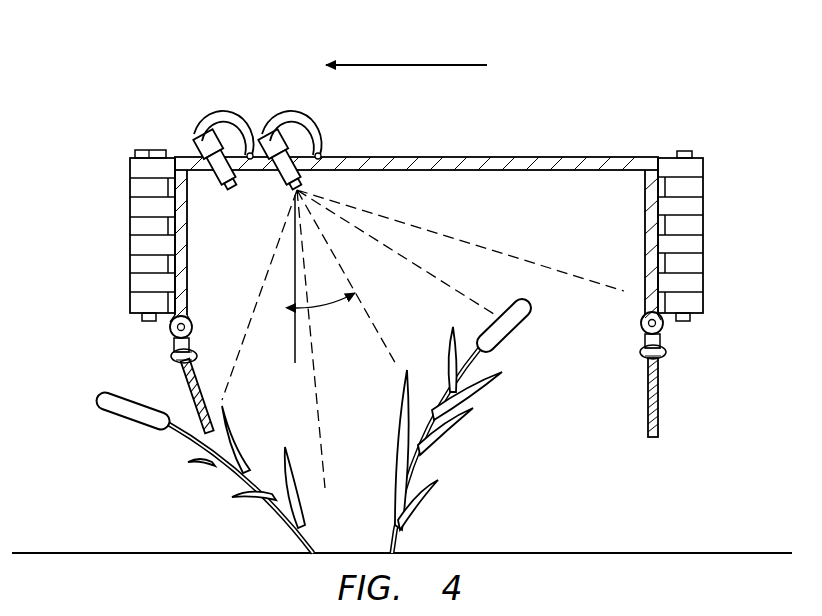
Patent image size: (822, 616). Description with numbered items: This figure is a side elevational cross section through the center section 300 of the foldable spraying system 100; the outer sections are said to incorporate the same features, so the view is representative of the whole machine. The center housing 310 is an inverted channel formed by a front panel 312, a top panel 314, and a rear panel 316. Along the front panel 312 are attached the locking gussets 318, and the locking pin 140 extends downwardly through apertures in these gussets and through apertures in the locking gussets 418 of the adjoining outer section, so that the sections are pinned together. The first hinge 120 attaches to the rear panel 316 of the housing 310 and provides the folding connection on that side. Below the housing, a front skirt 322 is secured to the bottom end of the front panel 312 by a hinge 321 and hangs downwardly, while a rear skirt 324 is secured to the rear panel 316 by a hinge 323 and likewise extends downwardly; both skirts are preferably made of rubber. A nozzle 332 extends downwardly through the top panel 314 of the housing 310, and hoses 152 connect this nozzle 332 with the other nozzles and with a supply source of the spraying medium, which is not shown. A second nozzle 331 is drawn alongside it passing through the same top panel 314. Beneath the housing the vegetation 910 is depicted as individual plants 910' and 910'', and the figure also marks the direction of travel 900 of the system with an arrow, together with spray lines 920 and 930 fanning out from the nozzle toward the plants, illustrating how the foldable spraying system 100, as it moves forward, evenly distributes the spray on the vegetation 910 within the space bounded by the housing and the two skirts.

The foldable spraying system 100 is at (594, 100).
The first hinge 120 is at (705, 166).
The locking pin 140 is at (136, 151).
The hoses 152 is at (323, 155).
The center section 300 is at (659, 118).
The center housing 310 is at (534, 157).
The front panel 312 is at (189, 238).
The top panel 314 is at (433, 157).
The rear panel 316 is at (645, 228).
The locking gussets 318 is at (137, 168).
The locking gussets 418 is at (136, 183).
The hinge 321 is at (170, 330).
The front skirt 322 is at (178, 366).
The hinge 323 is at (665, 326).
The rear skirt 324 is at (661, 395).
The first spray nozzle 331 is at (199, 138).
The nozzle 332 is at (256, 133).
The direction of travel 900 is at (404, 63).
The vegetation 910 is at (307, 430).
The first plant 910' is at (172, 472).
The second plant 910'' is at (487, 430).
The spray pattern boundary 920 is at (492, 246).
The spray direction line 930 is at (386, 326).